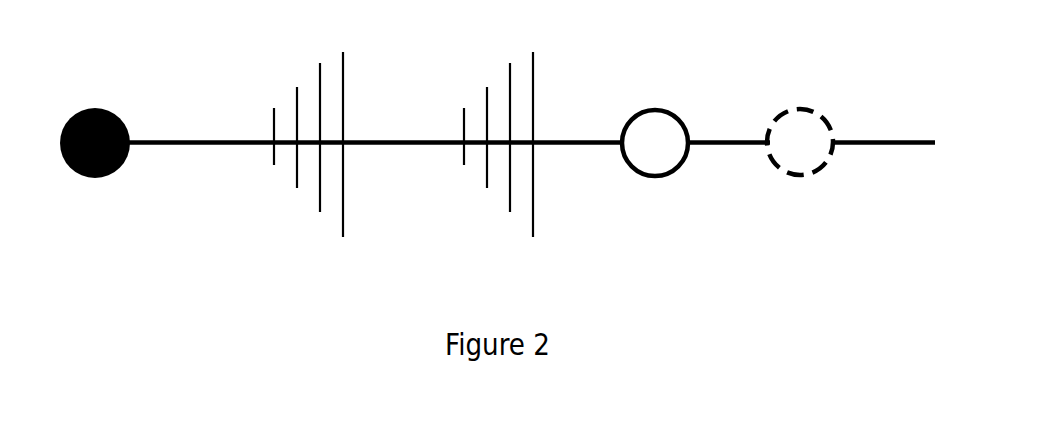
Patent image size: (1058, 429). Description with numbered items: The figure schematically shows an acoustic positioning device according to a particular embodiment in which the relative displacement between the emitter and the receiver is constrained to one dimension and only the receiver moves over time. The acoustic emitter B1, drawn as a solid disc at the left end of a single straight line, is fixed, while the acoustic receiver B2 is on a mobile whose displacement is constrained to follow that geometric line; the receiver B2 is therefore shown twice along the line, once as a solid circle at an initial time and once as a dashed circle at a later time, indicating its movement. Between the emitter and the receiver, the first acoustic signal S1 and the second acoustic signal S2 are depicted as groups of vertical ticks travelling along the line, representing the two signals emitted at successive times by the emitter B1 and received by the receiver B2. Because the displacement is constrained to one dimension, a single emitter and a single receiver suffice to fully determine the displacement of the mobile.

The acoustic emitter B1 is at (91, 178).
The first acoustic signal S1 is at (302, 203).
The second acoustic signal S2 is at (500, 213).
The acoustic receiver B2 is at (657, 178).